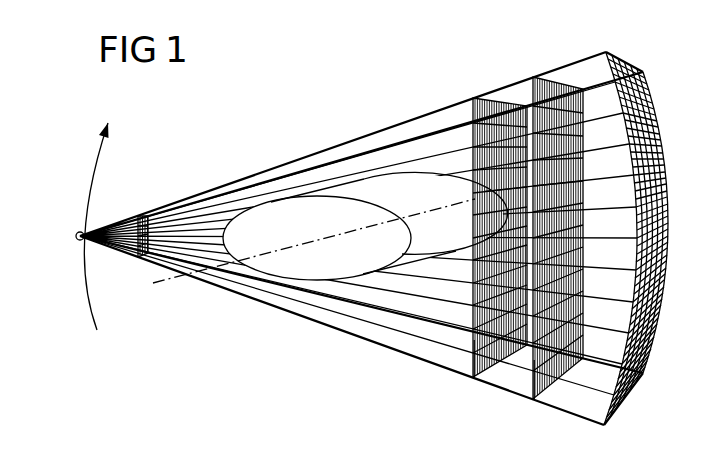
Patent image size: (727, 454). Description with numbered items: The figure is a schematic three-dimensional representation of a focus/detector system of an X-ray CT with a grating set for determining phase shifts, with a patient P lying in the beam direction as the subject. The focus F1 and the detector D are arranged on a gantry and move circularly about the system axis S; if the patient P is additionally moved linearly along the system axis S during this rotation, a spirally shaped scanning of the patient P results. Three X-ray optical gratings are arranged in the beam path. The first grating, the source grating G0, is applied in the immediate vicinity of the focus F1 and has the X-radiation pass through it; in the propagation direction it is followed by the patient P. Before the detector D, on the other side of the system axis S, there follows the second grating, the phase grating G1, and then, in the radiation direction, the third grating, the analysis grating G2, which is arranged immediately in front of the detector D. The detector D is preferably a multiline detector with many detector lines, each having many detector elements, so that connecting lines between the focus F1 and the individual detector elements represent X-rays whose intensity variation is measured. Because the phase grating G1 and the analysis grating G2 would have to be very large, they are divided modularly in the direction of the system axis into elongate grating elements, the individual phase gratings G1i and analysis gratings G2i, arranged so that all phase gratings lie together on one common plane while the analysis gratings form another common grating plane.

The focus F1 is at (77, 234).
The source grating G0 is at (141, 214).
The phase grating G1 is at (494, 98).
The analysis grating G2 is at (564, 83).
The phase grating G1i is at (473, 338).
The analysis grating G2i is at (533, 360).
The entire detector D is at (646, 125).
The patient P is at (311, 281).
The system axis S is at (168, 278).